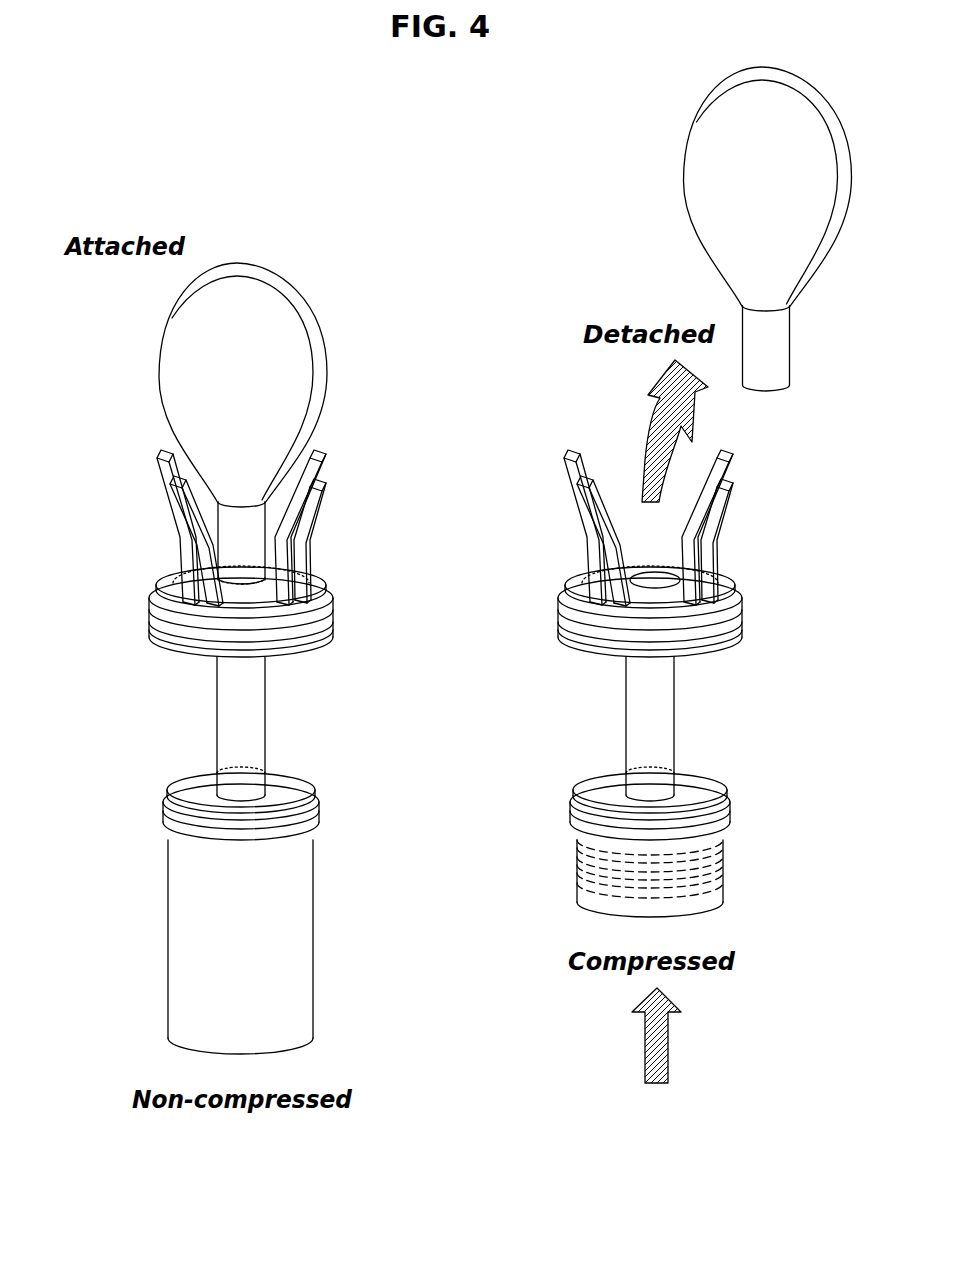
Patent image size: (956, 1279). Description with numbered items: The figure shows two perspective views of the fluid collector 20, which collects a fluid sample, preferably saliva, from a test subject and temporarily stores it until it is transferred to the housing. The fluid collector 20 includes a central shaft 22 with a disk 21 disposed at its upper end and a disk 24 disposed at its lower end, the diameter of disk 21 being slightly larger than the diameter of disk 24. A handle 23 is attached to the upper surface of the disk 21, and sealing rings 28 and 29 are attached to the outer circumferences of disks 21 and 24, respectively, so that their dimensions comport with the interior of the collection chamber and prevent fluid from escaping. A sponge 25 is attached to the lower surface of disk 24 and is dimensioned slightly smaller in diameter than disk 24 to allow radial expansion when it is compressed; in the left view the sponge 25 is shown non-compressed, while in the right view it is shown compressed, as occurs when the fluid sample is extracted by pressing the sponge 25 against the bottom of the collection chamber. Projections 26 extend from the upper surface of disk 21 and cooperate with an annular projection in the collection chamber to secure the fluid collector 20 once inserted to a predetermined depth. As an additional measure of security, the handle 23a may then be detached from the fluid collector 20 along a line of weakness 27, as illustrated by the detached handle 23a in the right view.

The fluid collector 20 is at (458, 193).
The disk 21 is at (299, 597).
The central shaft 22 is at (303, 729).
The handle 23 is at (305, 423).
The handle 23a is at (706, 229).
The disk 24 is at (304, 777).
The sponge 25 is at (510, 936).
The projections 26 is at (308, 508).
The line of weakness 27 is at (179, 636).
The sealing ring 28 is at (297, 644).
The sealing ring 29 is at (302, 823).